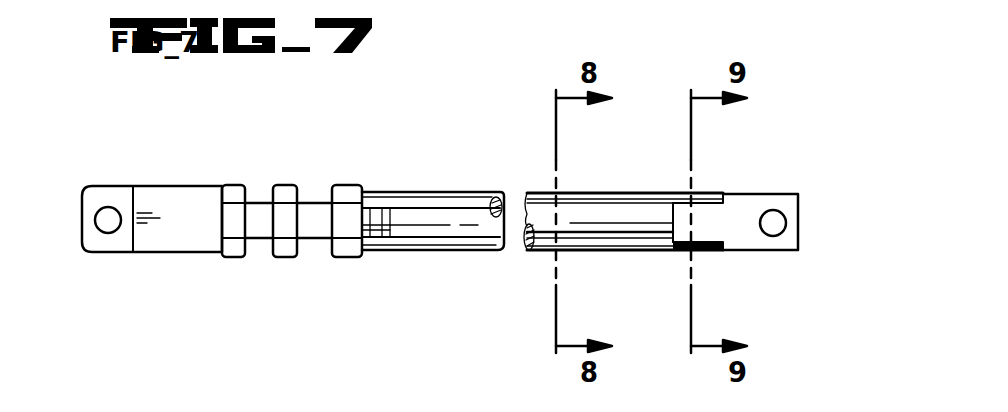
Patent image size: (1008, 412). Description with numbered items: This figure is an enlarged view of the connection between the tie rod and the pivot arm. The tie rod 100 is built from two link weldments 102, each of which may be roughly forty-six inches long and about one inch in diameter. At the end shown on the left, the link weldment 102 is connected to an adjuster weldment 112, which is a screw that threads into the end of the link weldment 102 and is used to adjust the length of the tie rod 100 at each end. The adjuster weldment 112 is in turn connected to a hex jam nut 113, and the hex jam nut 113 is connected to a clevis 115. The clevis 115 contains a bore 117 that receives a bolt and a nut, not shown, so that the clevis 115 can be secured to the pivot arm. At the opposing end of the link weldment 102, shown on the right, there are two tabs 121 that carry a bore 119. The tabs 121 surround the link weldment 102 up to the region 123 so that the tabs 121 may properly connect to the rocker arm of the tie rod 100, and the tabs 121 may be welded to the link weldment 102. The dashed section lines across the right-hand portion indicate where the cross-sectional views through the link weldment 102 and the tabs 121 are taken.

The tie rod 100 is at (626, 160).
The link weldment 102 is at (424, 252).
The adjuster weldment 112 is at (286, 185).
The hex jam nut 113 is at (228, 185).
The clevis 115 is at (88, 186).
The bore 117 is at (108, 207).
The bore 119 is at (775, 236).
The tab 121 is at (796, 194).
The region 123 is at (722, 195).